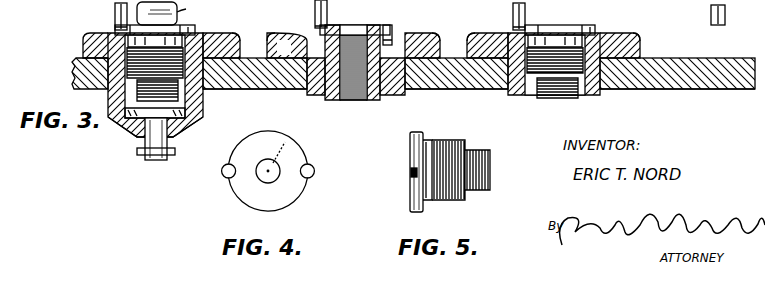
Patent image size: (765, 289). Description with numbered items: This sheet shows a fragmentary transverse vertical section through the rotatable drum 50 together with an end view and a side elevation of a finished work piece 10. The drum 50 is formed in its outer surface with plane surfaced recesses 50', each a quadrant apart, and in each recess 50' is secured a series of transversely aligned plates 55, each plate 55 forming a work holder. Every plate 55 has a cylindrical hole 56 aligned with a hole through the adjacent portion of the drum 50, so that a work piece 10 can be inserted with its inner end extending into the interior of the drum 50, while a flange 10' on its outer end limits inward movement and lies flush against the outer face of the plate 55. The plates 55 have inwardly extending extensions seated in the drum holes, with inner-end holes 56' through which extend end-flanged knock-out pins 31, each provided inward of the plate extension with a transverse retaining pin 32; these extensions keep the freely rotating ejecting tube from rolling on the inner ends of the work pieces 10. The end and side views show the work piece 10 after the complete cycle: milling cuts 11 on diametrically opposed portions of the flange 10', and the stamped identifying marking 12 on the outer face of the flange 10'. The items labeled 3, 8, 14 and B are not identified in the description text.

In FIG. 3, the nozzle tip 3 is at (203, 6).
In FIG. 3, the pin 8 is at (112, 10).
In FIG. 3, the work piece 10 is at (360, 84).
In FIG. 4, the work piece 10 is at (254, 175).
In FIG. 5, the work piece 10 is at (433, 180).
In FIG. 3, the flange 10' is at (348, 26).
In FIG. 4, the flange 10' is at (295, 137).
In FIG. 5, the flange 10' is at (399, 172).
In FIG. 3, the milling cuts 11 is at (114, 28).
In FIG. 4, the milling cuts 11 is at (226, 171).
In FIG. 5, the milling cuts 11 is at (410, 172).
In FIG. 4, the marking 12 is at (286, 200).
In FIG. 3, the cap 14 is at (178, 12).
In FIG. 3, the knock-out pin 31 is at (157, 162).
In FIG. 3, the transverse retaining pin 32 is at (137, 152).
In FIG. 3, the rotatable drum 50 is at (397, 85).
In FIG. 3, the plane surfaced recess 50' is at (355, 41).
In FIG. 3, the plate 55 is at (240, 36).
In FIG. 3, the cylindrical hole 56 is at (372, 75).
In FIG. 3, the inner-end hole 56' is at (138, 138).
In FIG. 3, the block B is at (283, 31).